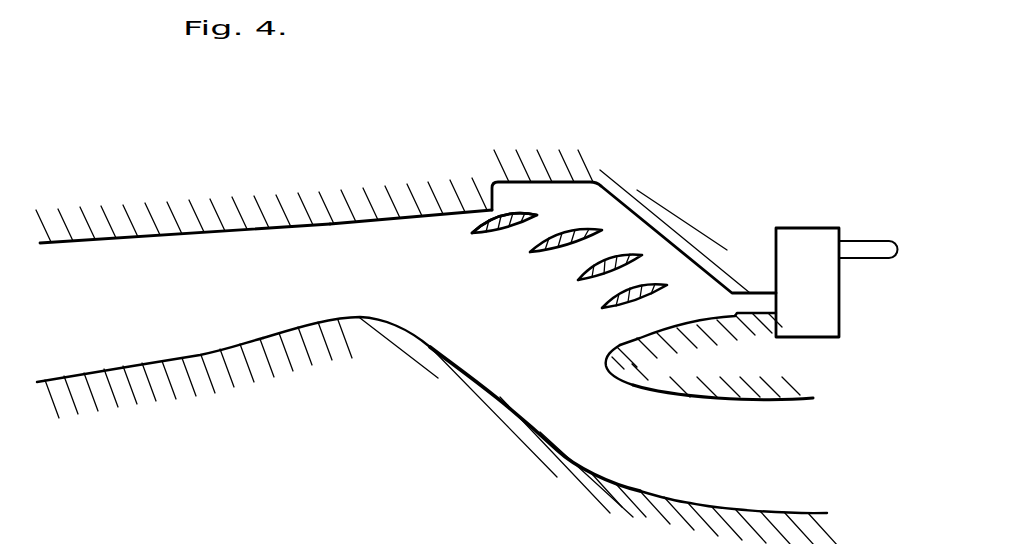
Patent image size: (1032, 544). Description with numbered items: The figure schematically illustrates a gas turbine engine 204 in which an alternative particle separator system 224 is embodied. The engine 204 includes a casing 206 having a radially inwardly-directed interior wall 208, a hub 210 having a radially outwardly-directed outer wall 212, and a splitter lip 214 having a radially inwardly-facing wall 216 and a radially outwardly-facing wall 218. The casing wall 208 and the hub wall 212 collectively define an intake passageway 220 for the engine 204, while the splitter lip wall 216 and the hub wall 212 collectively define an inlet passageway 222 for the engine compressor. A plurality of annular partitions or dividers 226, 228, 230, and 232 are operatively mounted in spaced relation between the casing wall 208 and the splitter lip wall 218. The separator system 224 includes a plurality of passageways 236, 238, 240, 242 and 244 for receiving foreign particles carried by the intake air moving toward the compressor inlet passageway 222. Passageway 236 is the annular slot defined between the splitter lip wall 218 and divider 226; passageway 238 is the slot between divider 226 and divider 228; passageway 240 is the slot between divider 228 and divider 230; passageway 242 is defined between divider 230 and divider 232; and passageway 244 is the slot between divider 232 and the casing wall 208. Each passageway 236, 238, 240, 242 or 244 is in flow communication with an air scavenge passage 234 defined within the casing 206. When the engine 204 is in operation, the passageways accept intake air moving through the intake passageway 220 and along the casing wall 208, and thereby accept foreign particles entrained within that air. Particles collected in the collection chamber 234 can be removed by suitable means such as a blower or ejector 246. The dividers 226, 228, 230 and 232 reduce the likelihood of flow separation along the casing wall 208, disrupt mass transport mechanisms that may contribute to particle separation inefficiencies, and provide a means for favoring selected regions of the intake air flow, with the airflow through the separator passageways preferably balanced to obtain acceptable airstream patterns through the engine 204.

The engine 204 is at (670, 133).
The casing 206 is at (143, 240).
The interior wall 208 is at (222, 229).
The hub 210 is at (132, 359).
The outer wall 212 is at (300, 328).
The splitter lip 214 is at (622, 384).
The radially inwardly-facing wall 216 is at (728, 399).
The radially outwardly-facing wall 218 is at (678, 326).
The intake passageway 220 is at (101, 232).
The inlet passageway 222 is at (762, 507).
The separator system 224 is at (398, 176).
The divider 226 is at (645, 292).
The divider 228 is at (610, 262).
The divider 230 is at (575, 240).
The divider 232 is at (521, 222).
The air scavenge passage 234 is at (709, 259).
The passageway 236 is at (622, 312).
The passageway 238 is at (603, 283).
The passageway 240 is at (570, 252).
The passageway 242 is at (506, 233).
The passageway 244 is at (471, 232).
The blower or ejector 246 is at (841, 293).